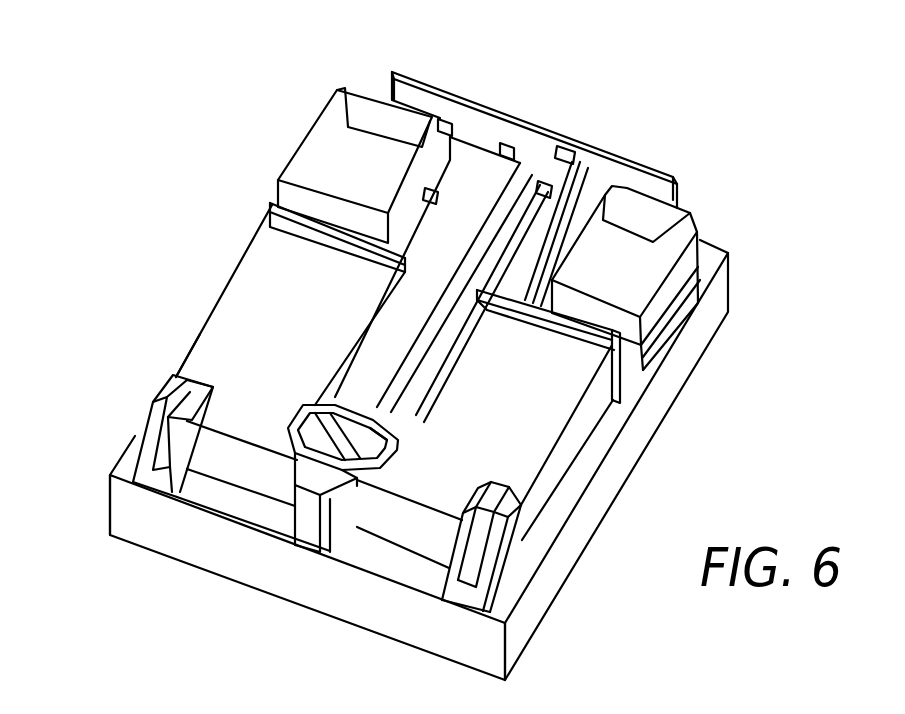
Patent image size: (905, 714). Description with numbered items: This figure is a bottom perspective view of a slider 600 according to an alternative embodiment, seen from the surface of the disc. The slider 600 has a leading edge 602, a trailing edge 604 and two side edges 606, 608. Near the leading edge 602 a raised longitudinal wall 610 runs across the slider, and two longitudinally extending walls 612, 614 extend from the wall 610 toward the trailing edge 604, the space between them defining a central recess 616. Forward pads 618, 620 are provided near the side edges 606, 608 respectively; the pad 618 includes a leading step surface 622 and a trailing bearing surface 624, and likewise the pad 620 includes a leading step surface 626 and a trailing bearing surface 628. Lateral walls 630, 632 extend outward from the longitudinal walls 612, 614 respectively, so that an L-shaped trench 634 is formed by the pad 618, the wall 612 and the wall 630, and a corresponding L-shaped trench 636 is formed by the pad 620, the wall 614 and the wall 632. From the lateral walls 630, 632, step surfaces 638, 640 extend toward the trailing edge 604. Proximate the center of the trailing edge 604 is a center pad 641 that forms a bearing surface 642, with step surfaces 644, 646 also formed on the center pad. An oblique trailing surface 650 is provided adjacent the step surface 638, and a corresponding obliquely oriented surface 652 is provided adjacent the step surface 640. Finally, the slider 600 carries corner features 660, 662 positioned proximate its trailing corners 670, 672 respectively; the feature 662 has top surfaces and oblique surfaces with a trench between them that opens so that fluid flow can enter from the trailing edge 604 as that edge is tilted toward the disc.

The slider 600 is at (195, 112).
The leading edge 602 is at (575, 133).
The trailing edge 604 is at (243, 528).
The side edge 606 is at (228, 292).
The side edge 608 is at (607, 458).
The raised longitudinal wall 610 is at (662, 168).
The longitudinally extending wall 612 is at (470, 177).
The longitudinally extending wall 614 is at (575, 205).
The central recess 616 is at (533, 200).
The forward pad 618 is at (298, 138).
The forward pad 620 is at (677, 273).
The leading step surface 622 is at (380, 110).
The trailing bearing surface 624 is at (300, 167).
The leading step surface 626 is at (670, 218).
The trailing bearing surface 628 is at (633, 273).
The lateral wall 630 is at (303, 223).
The lateral wall 632 is at (613, 405).
The L-shaped trench 634 is at (432, 190).
The L-shaped trench 636 is at (548, 190).
The step surface 638 is at (215, 345).
The step surface 640 is at (567, 470).
The center pad 641 is at (323, 430).
The bearing surface 642 is at (320, 482).
The step surface 644 is at (315, 400).
The step surface 646 is at (370, 443).
The oblique trailing surface 650 is at (227, 477).
The obliquely oriented surface 652 is at (417, 547).
The corner feature 660 is at (128, 457).
The corner feature 662 is at (505, 583).
The corner 670 is at (110, 538).
The corner 672 is at (507, 681).